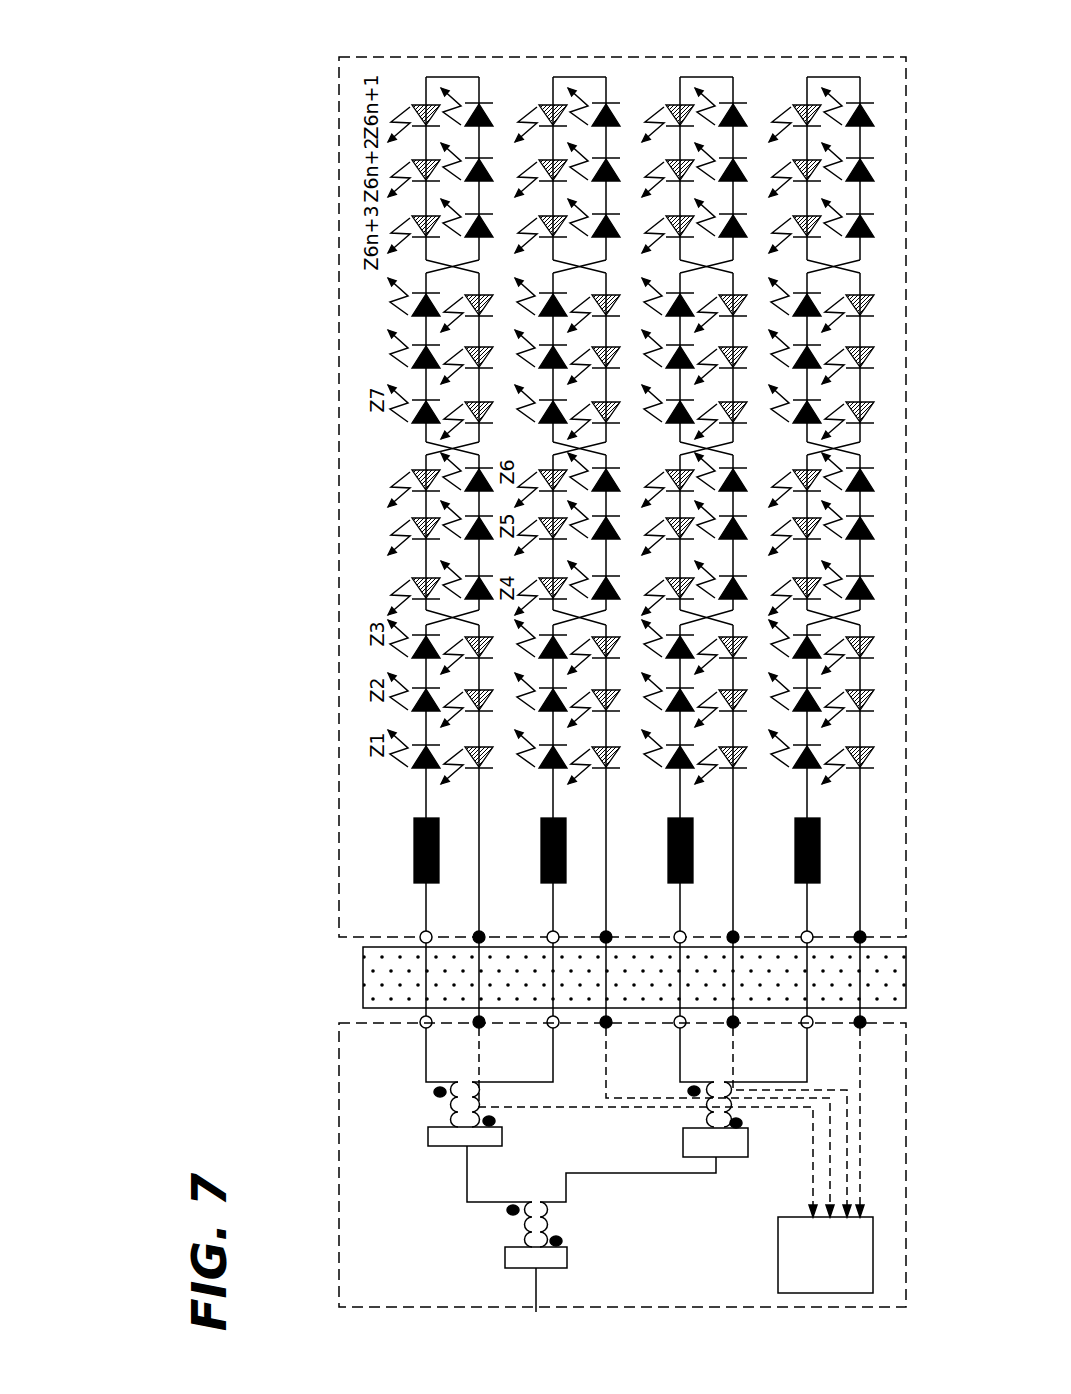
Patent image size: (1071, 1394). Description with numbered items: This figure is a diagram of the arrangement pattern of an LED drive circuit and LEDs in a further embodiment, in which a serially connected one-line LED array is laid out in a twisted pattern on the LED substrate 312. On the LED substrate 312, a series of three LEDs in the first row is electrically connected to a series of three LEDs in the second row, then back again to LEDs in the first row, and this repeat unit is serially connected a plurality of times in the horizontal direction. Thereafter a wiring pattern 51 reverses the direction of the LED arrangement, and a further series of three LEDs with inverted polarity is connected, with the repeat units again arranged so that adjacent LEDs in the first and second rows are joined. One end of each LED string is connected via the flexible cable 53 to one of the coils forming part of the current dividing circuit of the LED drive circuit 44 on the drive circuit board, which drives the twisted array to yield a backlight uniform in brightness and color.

The wiring pattern 51 is at (443, 77).
The LED substrate 312 is at (339, 835).
The flexible cable 53 is at (363, 980).
The LED drive circuit 44 is at (340, 1196).